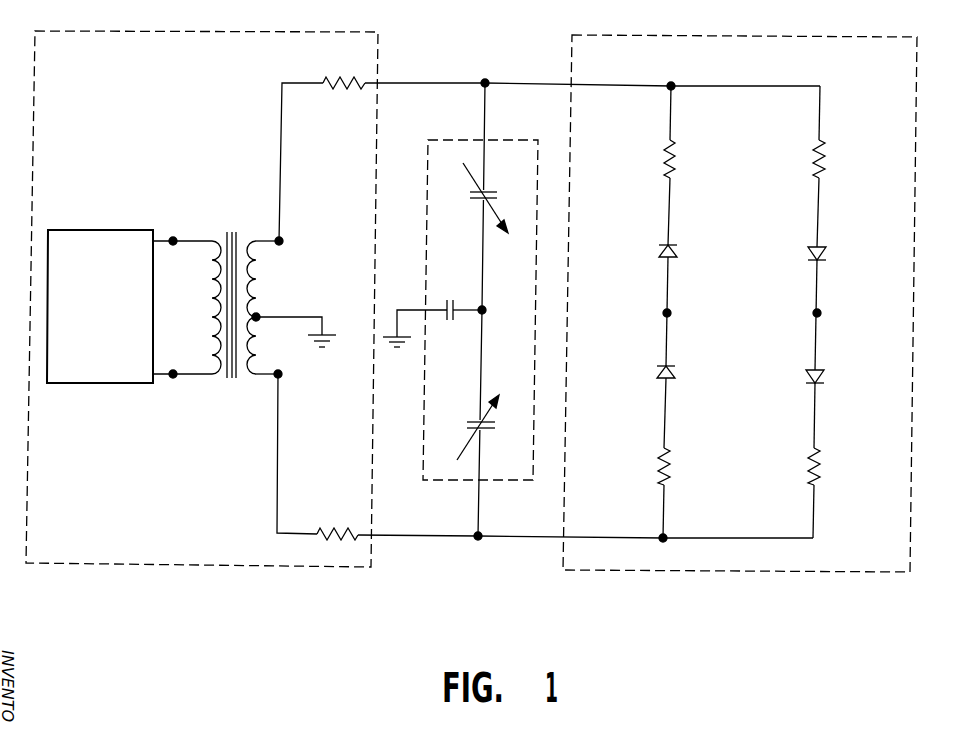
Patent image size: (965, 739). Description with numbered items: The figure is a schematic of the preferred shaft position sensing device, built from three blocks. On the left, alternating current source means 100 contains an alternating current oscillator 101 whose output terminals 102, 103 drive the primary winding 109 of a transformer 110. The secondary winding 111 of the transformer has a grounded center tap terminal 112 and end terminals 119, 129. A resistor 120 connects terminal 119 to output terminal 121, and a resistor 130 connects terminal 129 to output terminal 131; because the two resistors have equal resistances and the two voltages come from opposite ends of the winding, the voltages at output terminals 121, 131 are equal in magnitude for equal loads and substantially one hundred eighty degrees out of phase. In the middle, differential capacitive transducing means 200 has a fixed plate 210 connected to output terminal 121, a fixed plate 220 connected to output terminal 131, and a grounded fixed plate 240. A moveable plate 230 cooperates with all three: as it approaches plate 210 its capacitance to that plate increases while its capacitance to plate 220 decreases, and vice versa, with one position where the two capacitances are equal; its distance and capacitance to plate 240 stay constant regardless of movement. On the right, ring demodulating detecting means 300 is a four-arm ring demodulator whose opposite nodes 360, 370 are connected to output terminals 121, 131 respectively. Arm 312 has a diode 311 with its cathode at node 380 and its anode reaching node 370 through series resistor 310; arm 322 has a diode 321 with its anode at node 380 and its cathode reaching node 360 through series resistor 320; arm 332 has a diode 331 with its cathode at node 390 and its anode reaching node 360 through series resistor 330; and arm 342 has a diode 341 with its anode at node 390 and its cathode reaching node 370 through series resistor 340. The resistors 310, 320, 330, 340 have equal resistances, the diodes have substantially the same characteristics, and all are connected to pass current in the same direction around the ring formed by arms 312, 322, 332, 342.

The alternating current source means 100 is at (177, 166).
The alternating current oscillator 101 is at (117, 316).
The output terminal 102 is at (174, 238).
The output terminal 103 is at (173, 378).
The primary winding 109 is at (216, 300).
The transformer 110 is at (229, 233).
The secondary winding 111 is at (252, 276).
The center tap terminal 112 is at (258, 315).
The terminal 119 is at (282, 241).
The resistor 120 is at (334, 86).
The output terminal 121 is at (484, 81).
The terminal 129 is at (281, 374).
The resistor 130 is at (331, 530).
The output terminal 131 is at (479, 540).
The differential capacitive transducing means 200 is at (469, 271).
The fixed plate 210 is at (489, 190).
The fixed plate 220 is at (485, 430).
The moveable plate 230 is at (454, 310).
The fixed plate 240 is at (448, 321).
The ring demodulating detecting means 300 is at (772, 75).
The series resistor 310 is at (671, 474).
The diode 311 is at (676, 370).
The arm 312 is at (672, 423).
The series resistor 320 is at (676, 156).
The diode 321 is at (678, 251).
The arm 322 is at (672, 204).
The series resistor 330 is at (826, 157).
The diode 331 is at (826, 253).
The arm 332 is at (836, 205).
The series resistor 340 is at (821, 474).
The diode 341 is at (826, 377).
The arm 342 is at (833, 424).
The node 360 is at (668, 88).
The node 370 is at (667, 539).
The node 380 is at (671, 313).
The node 390 is at (821, 313).